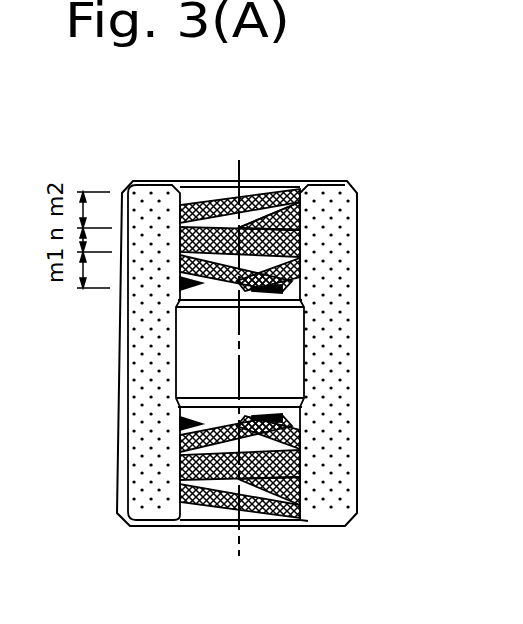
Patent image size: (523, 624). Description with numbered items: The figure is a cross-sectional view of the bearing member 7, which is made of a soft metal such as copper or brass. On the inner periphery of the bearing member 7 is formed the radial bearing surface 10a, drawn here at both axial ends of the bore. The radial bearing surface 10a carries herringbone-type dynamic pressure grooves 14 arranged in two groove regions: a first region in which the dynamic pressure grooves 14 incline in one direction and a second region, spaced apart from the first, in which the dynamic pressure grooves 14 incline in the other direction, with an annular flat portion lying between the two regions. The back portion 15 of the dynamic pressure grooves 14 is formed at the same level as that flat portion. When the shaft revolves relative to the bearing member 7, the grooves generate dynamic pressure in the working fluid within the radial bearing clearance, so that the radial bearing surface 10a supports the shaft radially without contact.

The bearing member 7 is at (358, 360).
The radial bearing surface 10a is at (305, 262).
The dynamic pressure grooves 14 is at (207, 198).
The back portion 15 is at (284, 196).